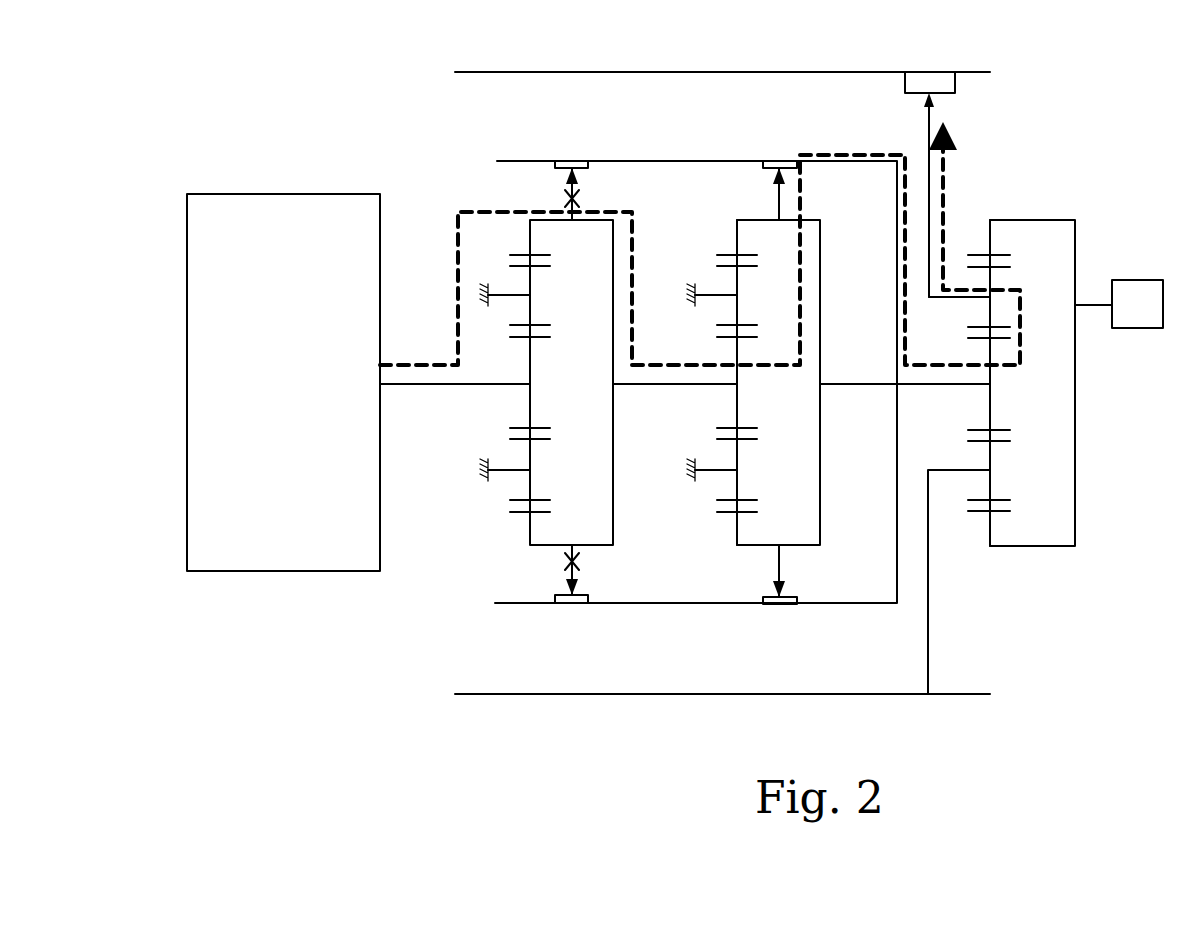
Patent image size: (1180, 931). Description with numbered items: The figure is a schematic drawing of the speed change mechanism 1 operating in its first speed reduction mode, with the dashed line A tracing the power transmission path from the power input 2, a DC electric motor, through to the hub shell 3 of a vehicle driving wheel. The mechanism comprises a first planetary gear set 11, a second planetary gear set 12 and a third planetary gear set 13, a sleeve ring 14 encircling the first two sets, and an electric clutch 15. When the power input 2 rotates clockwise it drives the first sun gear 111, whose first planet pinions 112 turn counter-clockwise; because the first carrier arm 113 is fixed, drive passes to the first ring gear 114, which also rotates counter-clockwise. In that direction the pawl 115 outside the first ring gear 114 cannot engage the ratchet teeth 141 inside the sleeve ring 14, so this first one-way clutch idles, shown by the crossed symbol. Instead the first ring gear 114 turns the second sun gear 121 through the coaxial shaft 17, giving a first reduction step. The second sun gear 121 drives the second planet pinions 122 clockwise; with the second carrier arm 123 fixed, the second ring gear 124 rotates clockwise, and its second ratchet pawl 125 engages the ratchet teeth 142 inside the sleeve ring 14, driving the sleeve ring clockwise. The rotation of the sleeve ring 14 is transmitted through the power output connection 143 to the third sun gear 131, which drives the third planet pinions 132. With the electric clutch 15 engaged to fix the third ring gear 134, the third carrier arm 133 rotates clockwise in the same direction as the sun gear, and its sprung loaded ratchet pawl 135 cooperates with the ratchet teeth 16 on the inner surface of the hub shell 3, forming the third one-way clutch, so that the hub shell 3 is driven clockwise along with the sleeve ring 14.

The speed change mechanism 1 is at (449, 637).
The power input 2 is at (245, 572).
The hub shell 3 is at (610, 696).
The first planetary gear set 11 is at (478, 548).
The second planetary gear set 12 is at (710, 546).
The third planetary gear set 13 is at (1010, 565).
The sleeve ring 14 is at (605, 605).
The electric clutch 15 is at (1133, 280).
The ratchet teeth 16 is at (940, 82).
The coaxial shaft 17 is at (645, 386).
The first sun gear 111 is at (533, 405).
The first planet pinions 112 is at (535, 290).
The first carrier arm 113 is at (490, 292).
The first ring gear 114 is at (615, 462).
The pawl 115 is at (585, 178).
The second sun gear 121 is at (740, 408).
The second planet pinions 122 is at (742, 285).
The second carrier arm 123 is at (700, 293).
The second ring gear 124 is at (822, 465).
The second ratchet pawl 125 is at (790, 178).
The third sun gear 131 is at (993, 418).
The third planet pinions 132 is at (1030, 256).
The third carrier arm 133 is at (932, 300).
The third ring gear 134 is at (1077, 465).
The sprung loaded ratchet pawl 135 is at (935, 105).
The ratchet teeth 141 is at (560, 170).
The ratchet teeth 142 is at (765, 172).
The power output connection 143 is at (940, 386).
The dashed line A is at (952, 181).